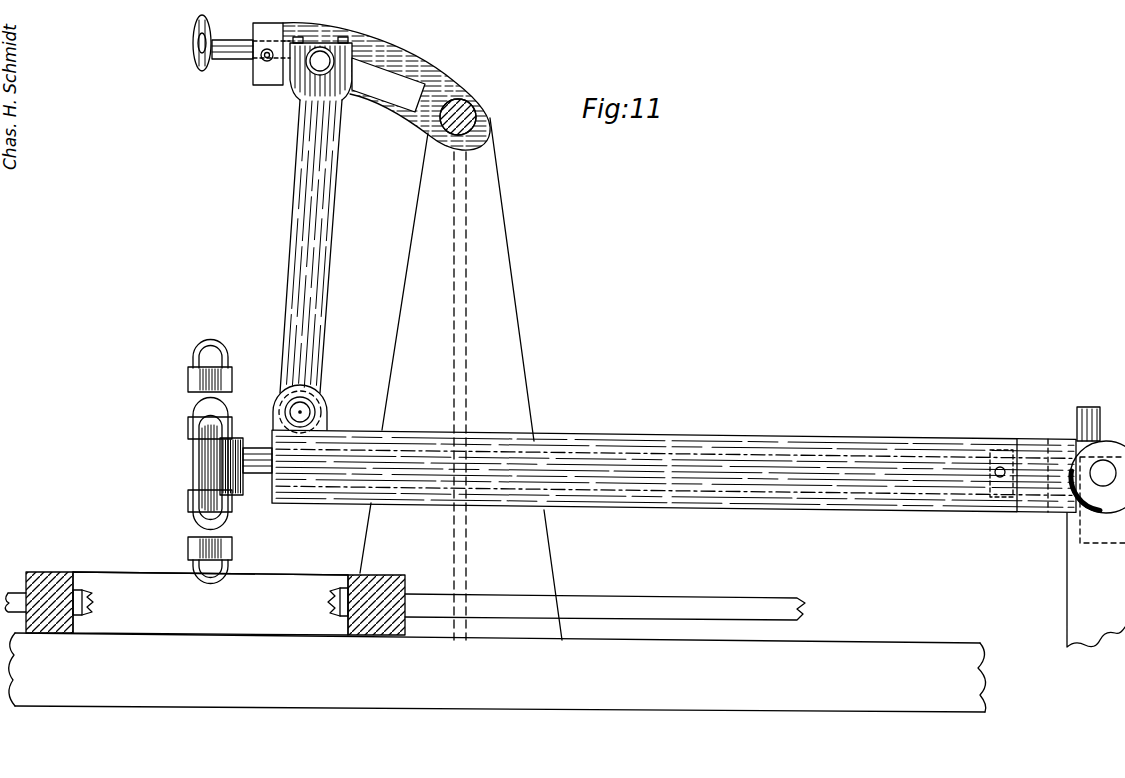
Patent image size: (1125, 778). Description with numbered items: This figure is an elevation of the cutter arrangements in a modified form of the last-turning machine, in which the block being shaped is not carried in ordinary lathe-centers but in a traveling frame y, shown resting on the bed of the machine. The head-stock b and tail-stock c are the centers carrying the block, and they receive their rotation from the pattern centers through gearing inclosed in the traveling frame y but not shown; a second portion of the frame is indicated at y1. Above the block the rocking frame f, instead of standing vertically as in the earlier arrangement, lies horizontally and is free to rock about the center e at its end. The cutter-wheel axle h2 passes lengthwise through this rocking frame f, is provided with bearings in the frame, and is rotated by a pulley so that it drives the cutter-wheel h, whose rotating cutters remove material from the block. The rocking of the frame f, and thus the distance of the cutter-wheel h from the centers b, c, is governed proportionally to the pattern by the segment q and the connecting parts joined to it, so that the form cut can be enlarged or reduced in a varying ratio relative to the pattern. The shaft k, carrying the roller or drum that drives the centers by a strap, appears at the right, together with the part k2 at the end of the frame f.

The segment q is at (396, 61).
The cutter-wheel h is at (204, 393).
The cutter-wheel axle h2 is at (253, 455).
The rocking frame f is at (607, 443).
The shaft k is at (1096, 514).
The rod in bar k2 is at (675, 472).
The center e is at (1103, 473).
The head-stock b is at (49, 602).
The tail-stock c is at (566, 605).
The traveling frame y is at (228, 594).
The slide plate y1 is at (122, 575).